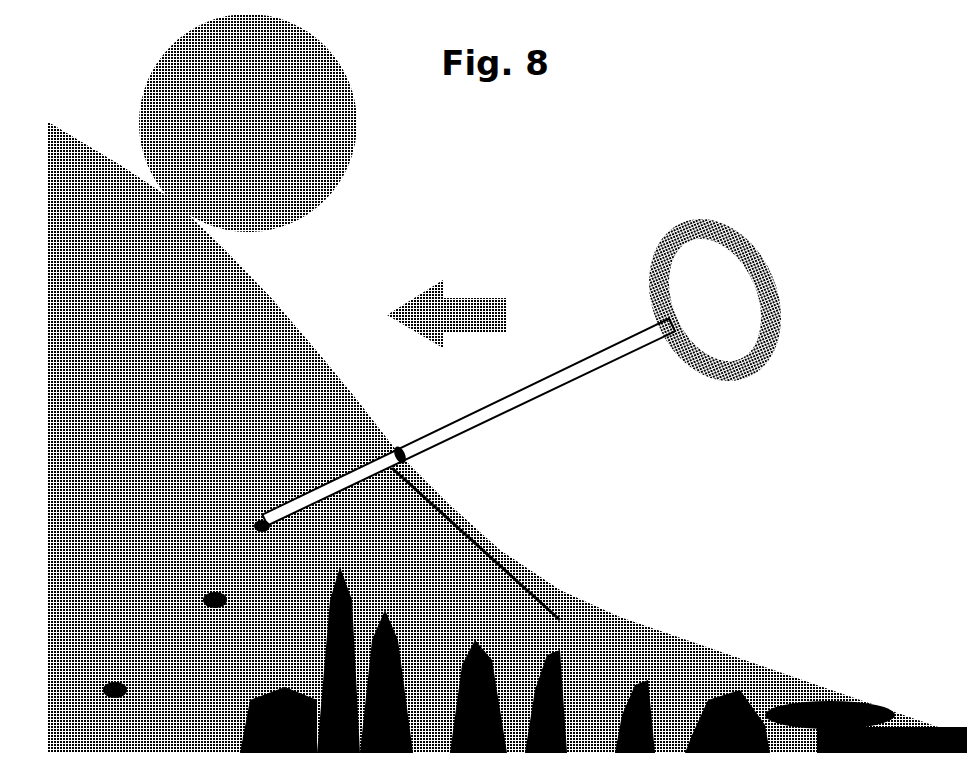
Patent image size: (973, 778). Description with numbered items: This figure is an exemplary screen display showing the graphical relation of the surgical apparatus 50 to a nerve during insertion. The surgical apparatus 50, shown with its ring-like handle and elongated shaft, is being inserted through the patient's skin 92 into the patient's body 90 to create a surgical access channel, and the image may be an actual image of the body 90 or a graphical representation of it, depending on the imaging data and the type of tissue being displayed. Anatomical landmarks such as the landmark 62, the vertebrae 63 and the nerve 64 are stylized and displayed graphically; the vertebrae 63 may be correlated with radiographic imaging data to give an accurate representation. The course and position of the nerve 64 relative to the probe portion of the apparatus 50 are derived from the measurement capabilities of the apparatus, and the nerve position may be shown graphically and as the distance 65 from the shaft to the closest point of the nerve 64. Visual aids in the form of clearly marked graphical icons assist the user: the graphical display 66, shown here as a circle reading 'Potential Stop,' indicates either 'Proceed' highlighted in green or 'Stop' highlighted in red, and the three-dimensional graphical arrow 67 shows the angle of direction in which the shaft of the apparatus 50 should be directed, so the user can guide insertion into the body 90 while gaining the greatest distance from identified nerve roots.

The surgical apparatus 50 is at (603, 373).
The anatomical landmark 62 is at (600, 643).
The vertebrae 63 is at (122, 683).
The nerve 64 is at (256, 572).
The distance 65 is at (262, 528).
The graphical icon 66 is at (286, 235).
The graphical arrow 67 is at (448, 295).
The patient's body 90 is at (548, 593).
The patient's skin 92 is at (495, 545).